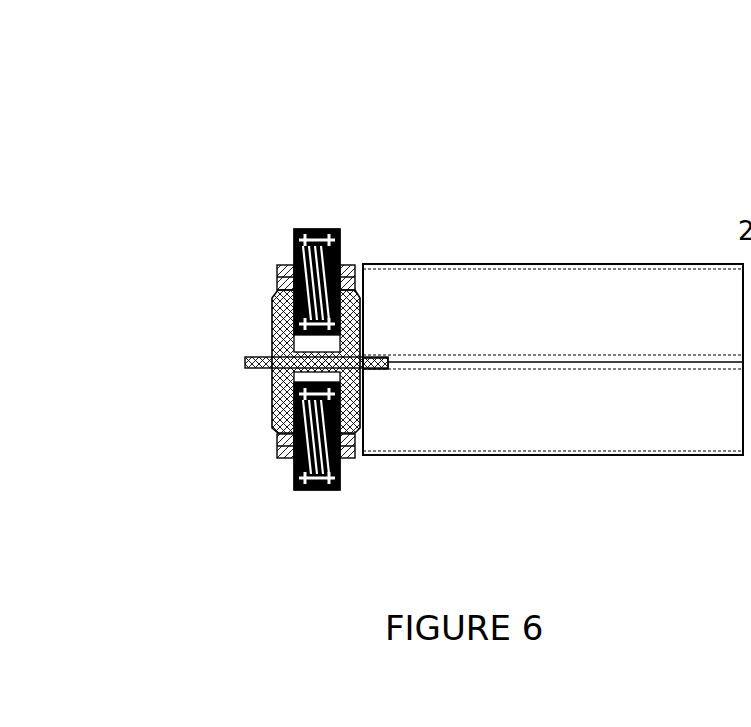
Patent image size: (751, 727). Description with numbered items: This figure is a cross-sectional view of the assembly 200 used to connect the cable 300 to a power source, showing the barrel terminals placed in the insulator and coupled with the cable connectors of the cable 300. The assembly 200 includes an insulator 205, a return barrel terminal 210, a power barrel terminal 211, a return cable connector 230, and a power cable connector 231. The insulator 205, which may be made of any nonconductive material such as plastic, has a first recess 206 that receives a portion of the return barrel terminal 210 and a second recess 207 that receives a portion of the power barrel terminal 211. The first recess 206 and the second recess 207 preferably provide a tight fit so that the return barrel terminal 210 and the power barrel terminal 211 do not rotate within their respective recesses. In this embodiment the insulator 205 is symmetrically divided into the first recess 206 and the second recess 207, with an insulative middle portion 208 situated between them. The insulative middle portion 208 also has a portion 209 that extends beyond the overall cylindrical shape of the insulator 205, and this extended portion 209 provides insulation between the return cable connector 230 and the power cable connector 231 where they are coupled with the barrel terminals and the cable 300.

The assembly 200 is at (677, 176).
The insulator 205 is at (273, 335).
The first recess 206 is at (276, 308).
The second recess 207 is at (283, 392).
The insulative middle portion 208 is at (273, 365).
The portion 209 is at (386, 360).
The return barrel terminal 210 is at (297, 240).
The power barrel terminal 211 is at (293, 475).
The return cable connector 230 is at (273, 268).
The power cable connector 231 is at (283, 447).
The cable 300 is at (516, 432).